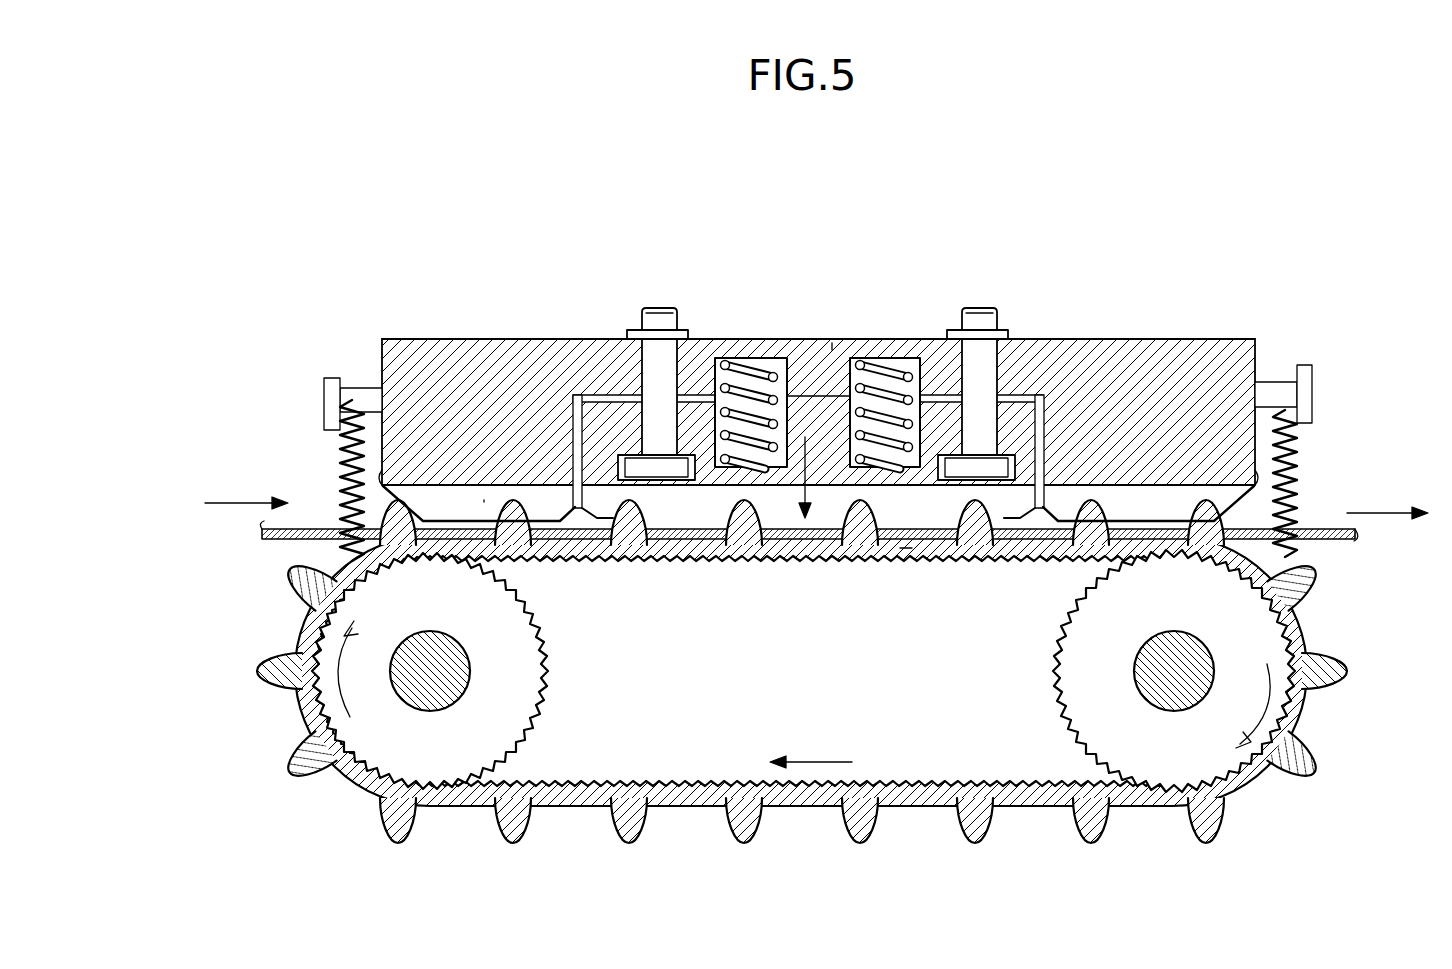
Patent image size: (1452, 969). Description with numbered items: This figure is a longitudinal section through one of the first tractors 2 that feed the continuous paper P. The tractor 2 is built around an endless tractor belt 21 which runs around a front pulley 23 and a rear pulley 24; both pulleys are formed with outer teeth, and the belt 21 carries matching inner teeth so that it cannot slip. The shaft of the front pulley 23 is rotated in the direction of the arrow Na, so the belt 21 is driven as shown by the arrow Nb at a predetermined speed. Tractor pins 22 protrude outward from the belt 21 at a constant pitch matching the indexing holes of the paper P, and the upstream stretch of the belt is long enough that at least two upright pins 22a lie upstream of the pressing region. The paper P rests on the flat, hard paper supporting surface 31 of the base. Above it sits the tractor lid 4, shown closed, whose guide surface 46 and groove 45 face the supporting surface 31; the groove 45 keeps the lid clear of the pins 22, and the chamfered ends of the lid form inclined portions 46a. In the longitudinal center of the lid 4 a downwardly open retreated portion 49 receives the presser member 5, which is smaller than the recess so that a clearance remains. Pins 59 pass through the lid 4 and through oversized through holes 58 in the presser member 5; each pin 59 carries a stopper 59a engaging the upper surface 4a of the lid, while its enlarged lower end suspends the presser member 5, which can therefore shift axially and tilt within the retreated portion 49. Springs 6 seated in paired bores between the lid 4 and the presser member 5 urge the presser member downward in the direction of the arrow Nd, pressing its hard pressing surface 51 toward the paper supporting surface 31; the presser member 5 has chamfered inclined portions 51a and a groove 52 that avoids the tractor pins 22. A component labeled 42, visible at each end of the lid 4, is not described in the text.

The first tractor 2 is at (1187, 220).
The tractor lid 4 is at (1180, 340).
The upper surface of the tractor lid 4a is at (525, 339).
The presser member 5 is at (815, 427).
The spring 6 is at (753, 358).
The tractor belt 21 is at (1008, 812).
The tractor pin 22 is at (717, 552).
The upright tractor pin 22a is at (410, 548).
The front pulley 23 is at (520, 704).
The rear pulley 24 is at (1080, 690).
The paper supporting surface 31 is at (906, 549).
The tension spring 42 is at (343, 470).
The groove 45 is at (484, 500).
The guide surface 46 is at (437, 525).
The inclined portion 46a is at (393, 500).
The retreated portion 49 is at (832, 343).
The pressing surface 51 is at (676, 563).
The inclined portion 51a is at (552, 512).
The groove 52 is at (677, 507).
The through hole 58 is at (592, 392).
The pin 59 is at (652, 327).
The stopper 59a is at (686, 329).
The continuous paper P is at (302, 527).
The rotation direction of the front pulley Na is at (332, 683).
The belt driving direction Nb is at (811, 747).
The pressing direction Nd is at (818, 548).